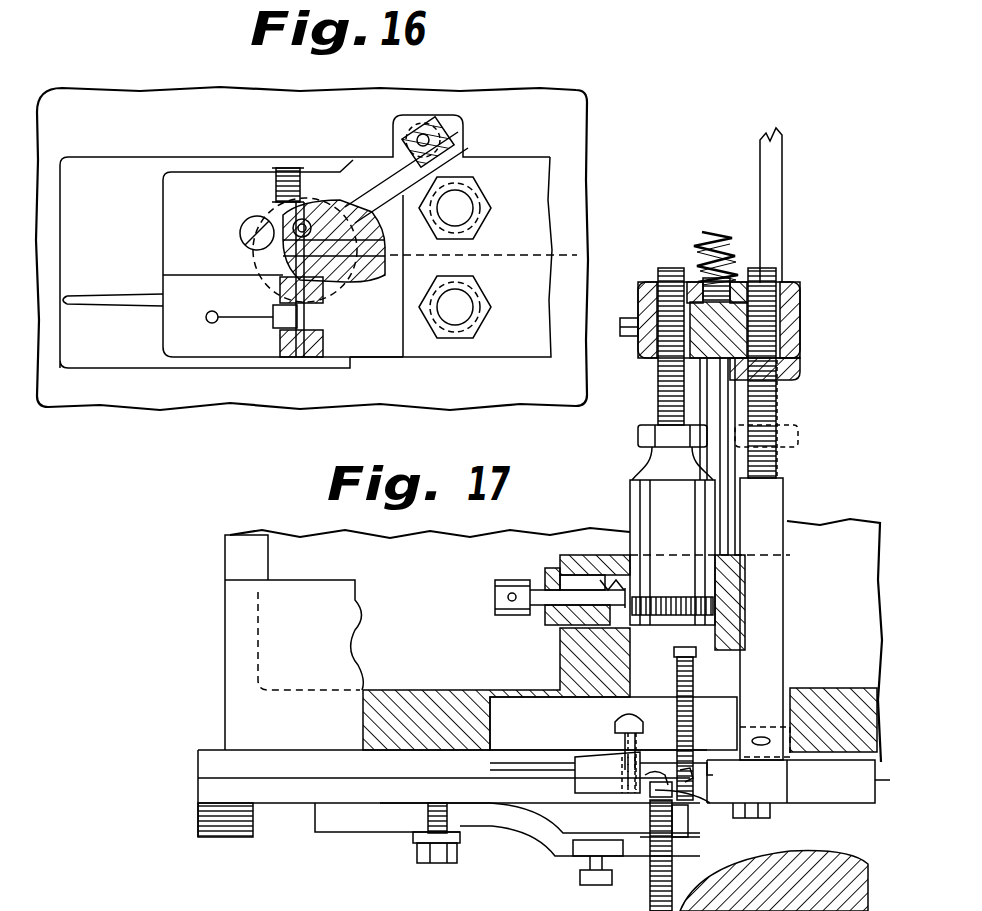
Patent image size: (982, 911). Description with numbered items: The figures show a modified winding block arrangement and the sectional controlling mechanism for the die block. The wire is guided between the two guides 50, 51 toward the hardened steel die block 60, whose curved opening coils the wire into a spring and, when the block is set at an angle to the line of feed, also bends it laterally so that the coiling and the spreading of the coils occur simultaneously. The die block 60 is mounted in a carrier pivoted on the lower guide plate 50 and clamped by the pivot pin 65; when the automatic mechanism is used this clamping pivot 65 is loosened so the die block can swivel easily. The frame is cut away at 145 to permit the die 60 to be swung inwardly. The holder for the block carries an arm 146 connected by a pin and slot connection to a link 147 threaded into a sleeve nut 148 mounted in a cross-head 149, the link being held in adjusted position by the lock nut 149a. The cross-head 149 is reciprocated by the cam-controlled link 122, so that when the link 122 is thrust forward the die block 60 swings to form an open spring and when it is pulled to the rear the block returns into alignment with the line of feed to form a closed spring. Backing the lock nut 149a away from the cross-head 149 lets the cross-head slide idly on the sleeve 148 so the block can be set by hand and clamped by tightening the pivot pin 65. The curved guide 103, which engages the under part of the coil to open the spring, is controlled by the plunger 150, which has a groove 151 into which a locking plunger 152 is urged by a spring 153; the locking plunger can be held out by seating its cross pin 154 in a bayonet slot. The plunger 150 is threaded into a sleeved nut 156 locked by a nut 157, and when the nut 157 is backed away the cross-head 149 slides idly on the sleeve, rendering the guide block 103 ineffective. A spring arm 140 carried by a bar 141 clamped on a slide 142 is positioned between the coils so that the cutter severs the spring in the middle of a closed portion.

In FIG. 16, the lower guide plate 50 is at (508, 347).
In FIG. 16, the guide 51 is at (540, 186).
In FIG. 17, the guide 51 is at (850, 798).
In FIG. 16, the die block 60 is at (187, 207).
In FIG. 17, the die block 60 is at (596, 768).
In FIG. 16, the pivot pin 65 is at (283, 338).
In FIG. 16, the curved guide 103 is at (357, 223).
In FIG. 17, the curved guide 103 is at (706, 768).
In FIG. 17, the link 122 is at (774, 202).
In FIG. 17, the spring arm 140 is at (690, 854).
In FIG. 17, the bar 141 is at (513, 840).
In FIG. 17, the slide 142 is at (215, 795).
In FIG. 16, the cut-away portion of frame 145 is at (104, 152).
In FIG. 17, the cut-away portion of frame 145 is at (565, 698).
In FIG. 16, the arm 146 is at (462, 144).
In FIG. 17, the arm 146 is at (712, 747).
In FIG. 16, the link 147 is at (430, 132).
In FIG. 17, the link 147 is at (770, 664).
In FIG. 17, the sleeve nut 148 is at (795, 285).
In FIG. 17, the cross-head 149 is at (801, 322).
In FIG. 17, the lock nut 149a is at (790, 364).
In FIG. 17, the plunger 150 is at (632, 501).
In FIG. 17, the groove 151 is at (668, 612).
In FIG. 17, the locking plunger 152 is at (548, 590).
In FIG. 17, the spring 153 is at (618, 566).
In FIG. 17, the cross pin 154 is at (548, 613).
In FIG. 17, the sleeved nut 156 is at (652, 283).
In FIG. 17, the nut 157 is at (640, 434).